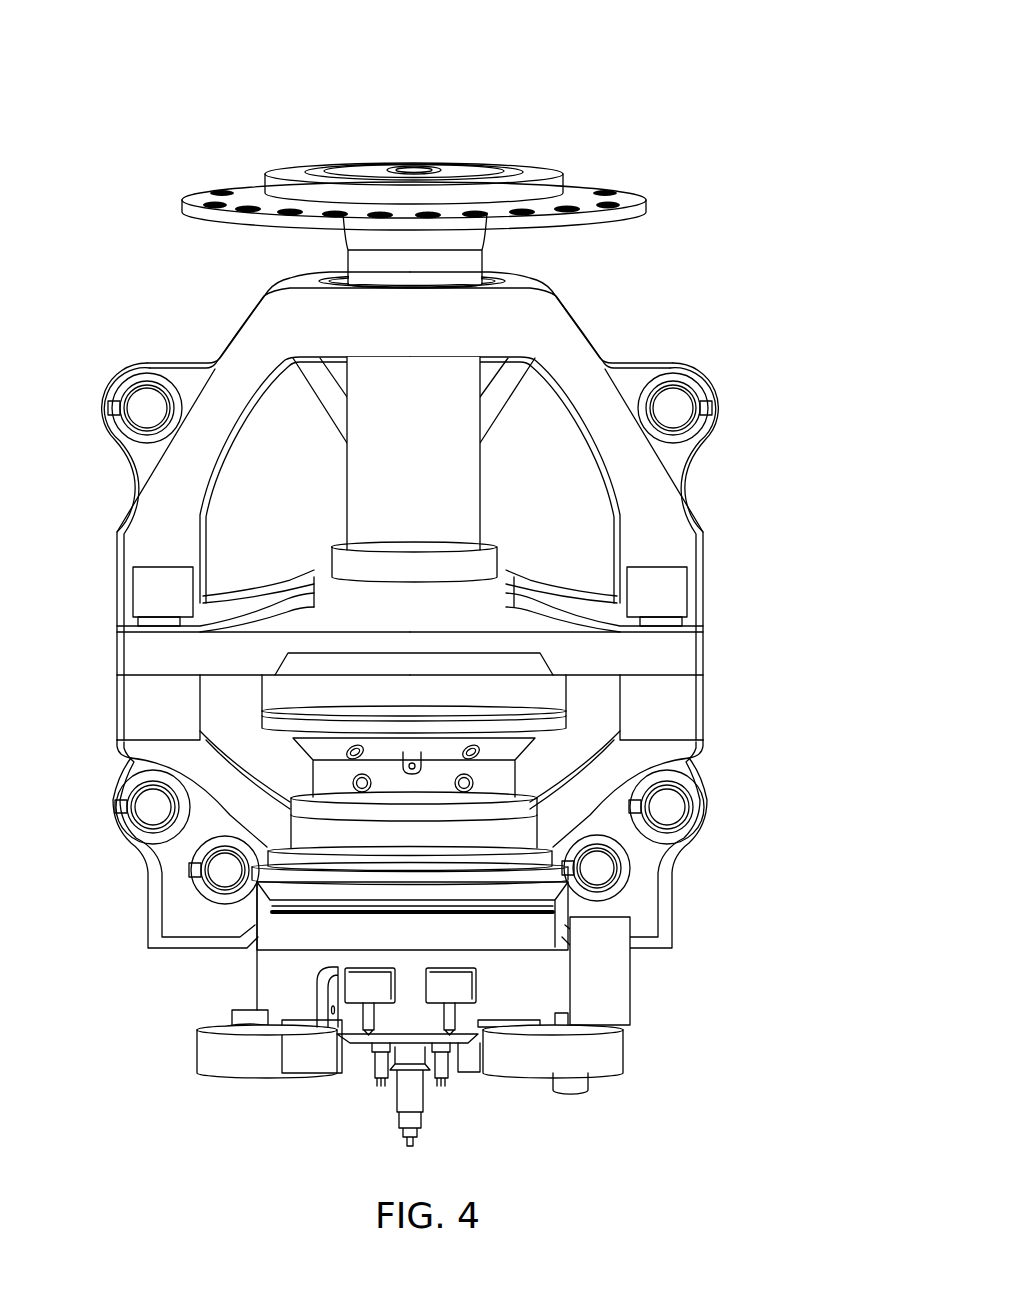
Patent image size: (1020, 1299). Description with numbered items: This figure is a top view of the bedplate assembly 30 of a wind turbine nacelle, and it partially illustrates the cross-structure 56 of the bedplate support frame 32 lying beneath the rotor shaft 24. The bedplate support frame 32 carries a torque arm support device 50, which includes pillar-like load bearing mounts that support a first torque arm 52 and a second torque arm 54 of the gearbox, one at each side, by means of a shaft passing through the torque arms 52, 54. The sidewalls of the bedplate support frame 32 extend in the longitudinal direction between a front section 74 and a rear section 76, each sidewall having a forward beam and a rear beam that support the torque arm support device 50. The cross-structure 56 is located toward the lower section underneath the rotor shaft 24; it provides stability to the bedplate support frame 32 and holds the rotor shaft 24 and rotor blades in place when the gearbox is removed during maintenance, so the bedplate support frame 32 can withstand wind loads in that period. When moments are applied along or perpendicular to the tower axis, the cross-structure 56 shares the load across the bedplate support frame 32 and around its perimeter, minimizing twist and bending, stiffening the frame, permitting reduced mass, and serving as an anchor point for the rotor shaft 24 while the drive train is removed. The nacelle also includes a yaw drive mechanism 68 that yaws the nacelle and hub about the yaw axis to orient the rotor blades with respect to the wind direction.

The bedplate assembly 30 is at (697, 63).
The rotor shaft 24 is at (356, 495).
The bedplate support frame 32 is at (680, 456).
The torque arm support device 50 is at (112, 705).
The first torque arm 52 is at (698, 651).
The second torque arm 54 is at (128, 657).
The cross-structure 56 is at (510, 405).
The yaw drive mechanism 68 is at (222, 873).
The front section 74 is at (572, 279).
The rear section 76 is at (697, 912).